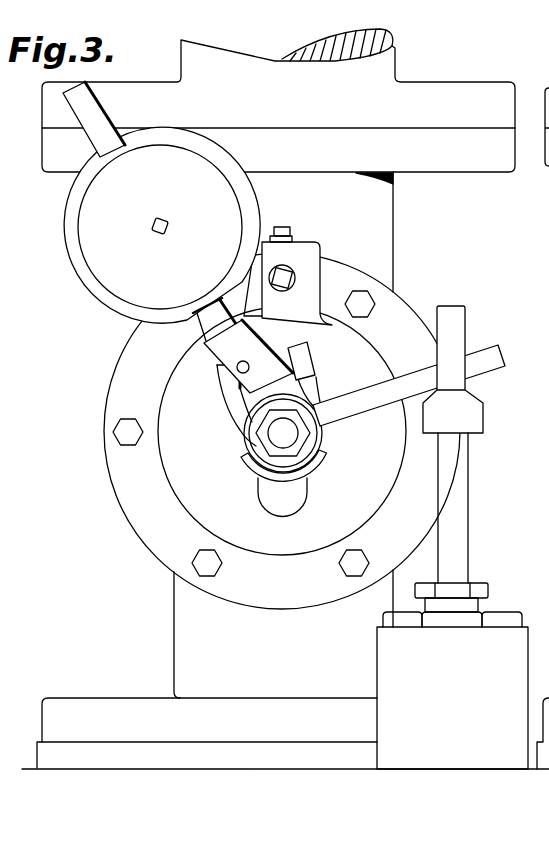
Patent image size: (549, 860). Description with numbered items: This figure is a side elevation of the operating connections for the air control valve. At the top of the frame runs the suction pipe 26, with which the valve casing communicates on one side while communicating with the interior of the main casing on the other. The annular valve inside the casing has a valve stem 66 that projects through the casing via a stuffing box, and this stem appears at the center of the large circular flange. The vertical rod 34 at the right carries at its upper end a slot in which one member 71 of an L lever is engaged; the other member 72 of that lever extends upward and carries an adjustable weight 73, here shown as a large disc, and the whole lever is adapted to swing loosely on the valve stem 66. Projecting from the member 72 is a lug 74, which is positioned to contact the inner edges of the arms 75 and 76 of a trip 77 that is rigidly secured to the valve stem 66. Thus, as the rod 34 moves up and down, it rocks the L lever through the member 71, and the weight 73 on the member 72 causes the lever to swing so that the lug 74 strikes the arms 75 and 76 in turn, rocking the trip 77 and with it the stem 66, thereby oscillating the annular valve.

The suction pipe 26 is at (378, 68).
The rod 34 is at (457, 552).
The valve stem 66 is at (283, 433).
The member of L lever 71 is at (409, 385).
The member of L lever 72 is at (90, 113).
The adjustable weight 73 is at (162, 225).
The lug 74 is at (249, 367).
The arm of trip 75 is at (226, 374).
The arm of trip 76 is at (300, 362).
The trip 77 is at (283, 423).